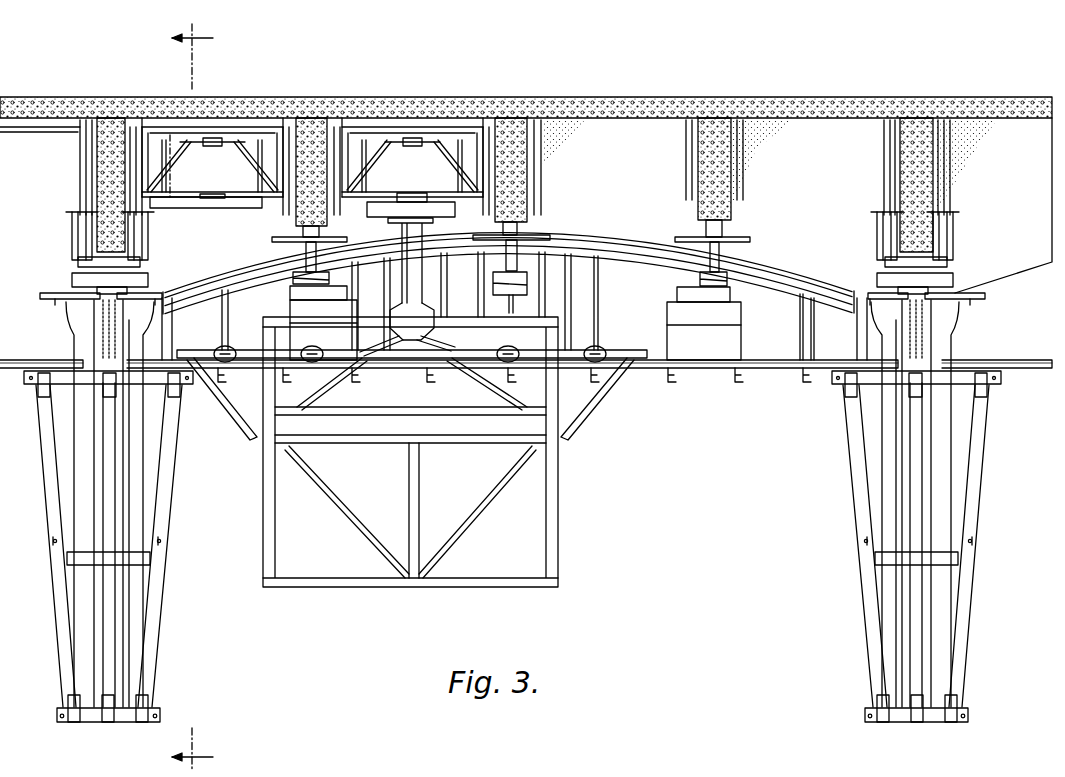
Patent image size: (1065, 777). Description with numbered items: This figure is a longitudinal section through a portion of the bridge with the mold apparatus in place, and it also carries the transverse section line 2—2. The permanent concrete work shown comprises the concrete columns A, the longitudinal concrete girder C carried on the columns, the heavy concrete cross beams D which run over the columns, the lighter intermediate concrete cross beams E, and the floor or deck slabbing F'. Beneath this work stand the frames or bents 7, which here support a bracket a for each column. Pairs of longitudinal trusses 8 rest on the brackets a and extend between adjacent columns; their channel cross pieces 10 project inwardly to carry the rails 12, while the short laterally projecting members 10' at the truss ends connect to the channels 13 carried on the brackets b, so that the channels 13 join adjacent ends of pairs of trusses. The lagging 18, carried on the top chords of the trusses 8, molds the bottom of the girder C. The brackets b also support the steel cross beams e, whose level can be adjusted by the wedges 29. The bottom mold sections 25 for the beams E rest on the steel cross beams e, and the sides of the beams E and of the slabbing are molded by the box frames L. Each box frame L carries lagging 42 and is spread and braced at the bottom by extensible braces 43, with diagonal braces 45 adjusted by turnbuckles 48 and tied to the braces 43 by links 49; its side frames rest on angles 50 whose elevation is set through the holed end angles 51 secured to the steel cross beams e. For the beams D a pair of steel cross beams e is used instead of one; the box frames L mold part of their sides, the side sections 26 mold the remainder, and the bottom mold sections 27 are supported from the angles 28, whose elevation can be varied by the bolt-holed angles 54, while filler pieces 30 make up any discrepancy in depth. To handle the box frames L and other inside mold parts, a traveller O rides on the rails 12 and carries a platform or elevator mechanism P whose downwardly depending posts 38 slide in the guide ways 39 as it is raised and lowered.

The section line 2— 2 is at (192, 393).
The frames or bents 7 is at (48, 492).
The longitudinal trusses 8 is at (628, 247).
The cross pieces 10 is at (520, 384).
The short laterally projecting members 10' is at (514, 306).
The rails 12 is at (30, 350).
The channels 13 is at (48, 300).
The lagging 18 is at (625, 236).
The bottom mold sections 25 is at (300, 224).
The side sections 26 is at (80, 228).
The bottom mold sections 27 is at (143, 262).
The angles 28 is at (74, 279).
The wedges 29 is at (110, 290).
The filler pieces 30 is at (90, 213).
The posts 38 is at (436, 322).
The guide ways 39 is at (558, 510).
The lagging 42 is at (262, 118).
The extensible braces 43 is at (240, 203).
The diagonal braces 45 is at (160, 156).
The turnbuckles 48 is at (212, 147).
The links 49 is at (260, 186).
The angles 50 is at (270, 242).
The end angles 51 is at (316, 268).
The angles 54 is at (70, 252).
The concrete columns A is at (135, 605).
The longitudinal concrete girder C is at (818, 182).
The concrete cross beams D is at (108, 118).
The intermediate concrete cross beams E is at (330, 166).
The floor or deck slabbing F' is at (526, 177).
The box frames L is at (415, 130).
The traveller O is at (556, 394).
The platform or elevator mechanism P is at (415, 275).
The bracket a is at (62, 383).
The brackets b is at (100, 338).
The steel cross beams e is at (74, 244).